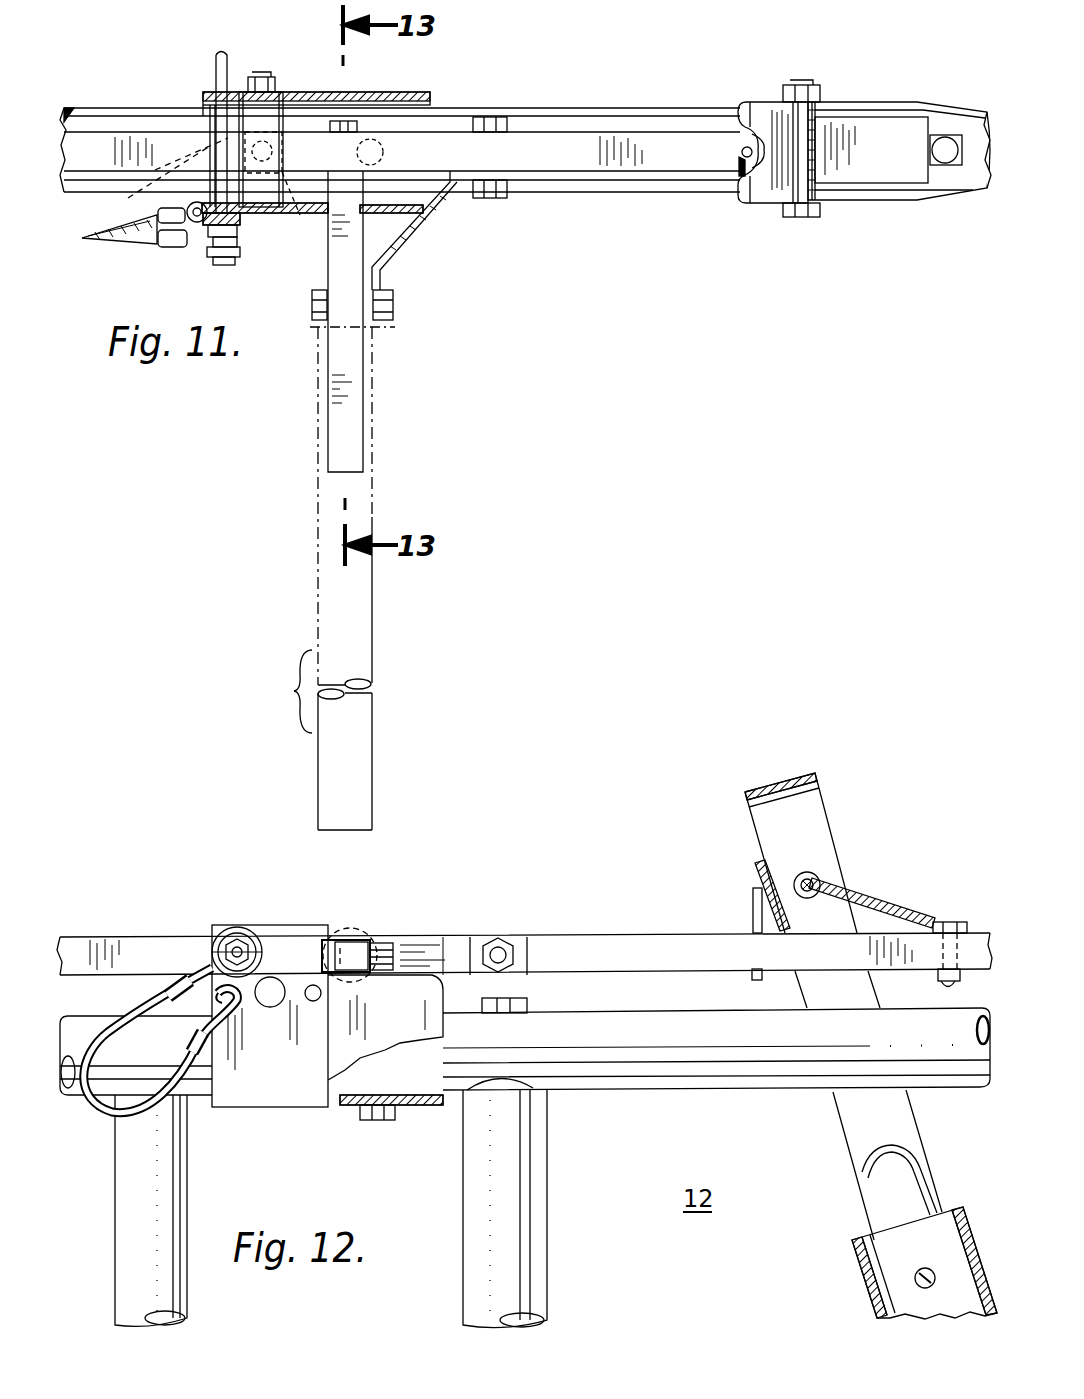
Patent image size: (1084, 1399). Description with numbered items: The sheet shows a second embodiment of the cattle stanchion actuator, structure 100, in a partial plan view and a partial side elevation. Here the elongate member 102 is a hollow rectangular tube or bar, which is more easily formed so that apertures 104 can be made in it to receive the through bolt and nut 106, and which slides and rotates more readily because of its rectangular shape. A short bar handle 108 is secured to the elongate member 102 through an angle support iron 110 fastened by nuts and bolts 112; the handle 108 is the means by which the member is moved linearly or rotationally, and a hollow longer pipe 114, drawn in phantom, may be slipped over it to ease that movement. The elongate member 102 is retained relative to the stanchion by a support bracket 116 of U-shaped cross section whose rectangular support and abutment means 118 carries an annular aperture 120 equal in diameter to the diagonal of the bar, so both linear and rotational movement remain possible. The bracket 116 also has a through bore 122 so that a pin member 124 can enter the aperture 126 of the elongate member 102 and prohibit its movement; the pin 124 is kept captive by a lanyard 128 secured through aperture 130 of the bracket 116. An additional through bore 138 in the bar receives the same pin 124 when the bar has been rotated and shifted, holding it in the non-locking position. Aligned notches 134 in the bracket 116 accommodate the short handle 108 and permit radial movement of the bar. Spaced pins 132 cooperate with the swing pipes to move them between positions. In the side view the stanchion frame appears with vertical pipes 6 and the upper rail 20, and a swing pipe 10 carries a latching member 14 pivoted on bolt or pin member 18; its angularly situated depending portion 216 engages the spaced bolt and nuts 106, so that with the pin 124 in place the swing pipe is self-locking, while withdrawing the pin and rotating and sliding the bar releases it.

In FIG. 12, the vertical pipe 6 is at (187, 1300).
In FIG. 12, the swing pipe member 10 is at (857, 1263).
In FIG. 11, the latching member 14 is at (853, 90).
In FIG. 12, the latching member 14 is at (833, 798).
In FIG. 11, the bolt or pin member 18 is at (800, 208).
In FIG. 12, the bolt or pin member 18 is at (812, 880).
In FIG. 12, the upper rail 20 is at (720, 1082).
In FIG. 11, the structure 100 is at (508, 234).
In FIG. 11, the elongate member 102 is at (680, 142).
In FIG. 12, the elongate member 102 is at (138, 943).
In FIG. 12, the aperture 104 is at (937, 973).
In FIG. 11, the bolt and nut 106 is at (945, 140).
In FIG. 12, the bolt and nut 106 is at (953, 927).
In FIG. 11, the bar handle 108 is at (365, 452).
In FIG. 12, the bar handle 108 is at (352, 937).
In FIG. 11, the angle support iron 110 is at (400, 245).
In FIG. 12, the angle support iron 110 is at (447, 940).
In FIG. 11, the nuts and bolts 112 is at (363, 112).
In FIG. 12, the nuts and bolts 112 is at (496, 938).
In FIG. 11, the hollow longer pipe 114 is at (358, 622).
In FIG. 12, the hollow longer pipe 114 is at (378, 928).
In FIG. 11, the support bracket 116 is at (312, 92).
In FIG. 12, the support bracket 116 is at (293, 940).
In FIG. 11, the rectangular support and abutment means 118 is at (244, 112).
In FIG. 11, the annular aperture 120 is at (205, 113).
In FIG. 11, the through bore 122 is at (215, 82).
In FIG. 12, the through bore 122 is at (240, 920).
In FIG. 11, the pin member 124 is at (218, 50).
In FIG. 12, the pin member 124 is at (232, 938).
In FIG. 11, the aperture 126 is at (130, 197).
In FIG. 11, the lanyard 128 is at (140, 243).
In FIG. 12, the lanyard 128 is at (187, 1107).
In FIG. 12, the aperture 130 is at (240, 990).
In FIG. 11, the spaced pin 132 is at (742, 160).
In FIG. 12, the spaced pin 132 is at (752, 907).
In FIG. 11, the notch 134 is at (345, 95).
In FIG. 12, the notch 134 is at (333, 933).
In FIG. 11, the through bore 138 is at (283, 207).
In FIG. 11, the depending portion 216 is at (880, 158).
In FIG. 12, the depending portion 216 is at (865, 885).